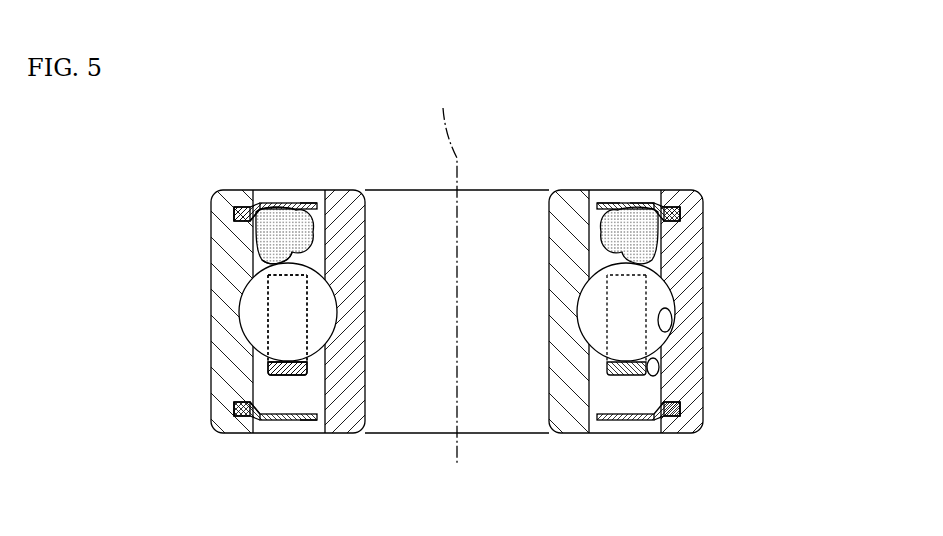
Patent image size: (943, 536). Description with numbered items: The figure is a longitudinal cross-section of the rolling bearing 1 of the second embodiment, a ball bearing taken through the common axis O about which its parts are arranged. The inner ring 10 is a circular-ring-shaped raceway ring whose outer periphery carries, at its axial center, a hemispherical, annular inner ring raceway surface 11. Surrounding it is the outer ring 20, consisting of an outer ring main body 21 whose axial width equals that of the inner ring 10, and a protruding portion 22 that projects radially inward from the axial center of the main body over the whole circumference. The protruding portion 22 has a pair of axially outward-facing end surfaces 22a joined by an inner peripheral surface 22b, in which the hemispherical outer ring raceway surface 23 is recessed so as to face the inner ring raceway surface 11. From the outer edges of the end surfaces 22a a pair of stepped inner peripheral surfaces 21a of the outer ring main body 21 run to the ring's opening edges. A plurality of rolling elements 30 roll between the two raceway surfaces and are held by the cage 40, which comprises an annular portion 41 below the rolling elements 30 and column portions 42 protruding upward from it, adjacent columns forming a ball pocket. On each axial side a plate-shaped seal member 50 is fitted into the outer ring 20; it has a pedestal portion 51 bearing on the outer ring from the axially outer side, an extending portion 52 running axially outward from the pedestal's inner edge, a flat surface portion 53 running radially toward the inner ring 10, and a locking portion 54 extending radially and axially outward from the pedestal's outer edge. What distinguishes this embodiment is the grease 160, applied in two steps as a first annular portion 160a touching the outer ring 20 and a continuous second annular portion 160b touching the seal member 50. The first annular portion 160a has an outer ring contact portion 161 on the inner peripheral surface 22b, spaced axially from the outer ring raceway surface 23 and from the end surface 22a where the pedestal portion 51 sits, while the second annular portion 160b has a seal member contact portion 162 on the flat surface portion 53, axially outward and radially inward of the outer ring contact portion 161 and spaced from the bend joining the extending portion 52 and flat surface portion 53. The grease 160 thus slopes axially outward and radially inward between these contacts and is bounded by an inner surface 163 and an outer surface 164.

The rolling bearing 1 is at (758, 112).
The inner ring 10 is at (543, 234).
The inner ring raceway surface 11 is at (602, 326).
The outer ring 20 is at (714, 238).
The outer ring main body 21 is at (700, 204).
The inner peripheral surface 21a is at (674, 188).
The protruding portion 22 is at (630, 424).
The end surface 22a is at (667, 193).
The inner peripheral surface 22b is at (668, 392).
The outer ring raceway surface 23 is at (664, 332).
The rolling element 30 is at (656, 300).
The cage 40 is at (260, 364).
The annular portion 41 is at (296, 378).
The column portion 42 is at (290, 301).
The seal member 50 is at (285, 194).
The pedestal portion 51 is at (240, 207).
The extending portion 52 is at (252, 205).
The flat surface portion 53 is at (300, 203).
The locking portion 54 is at (232, 212).
The grease 160 is at (127, 218).
The first annular portion 160a is at (268, 238).
The second annular portion 160b is at (262, 250).
The outer ring contact portion 161 is at (703, 262).
The seal member contact portion 162 is at (623, 192).
The inner surface 163 is at (581, 193).
The outer surface 164 is at (647, 193).
The common axis O is at (444, 273).